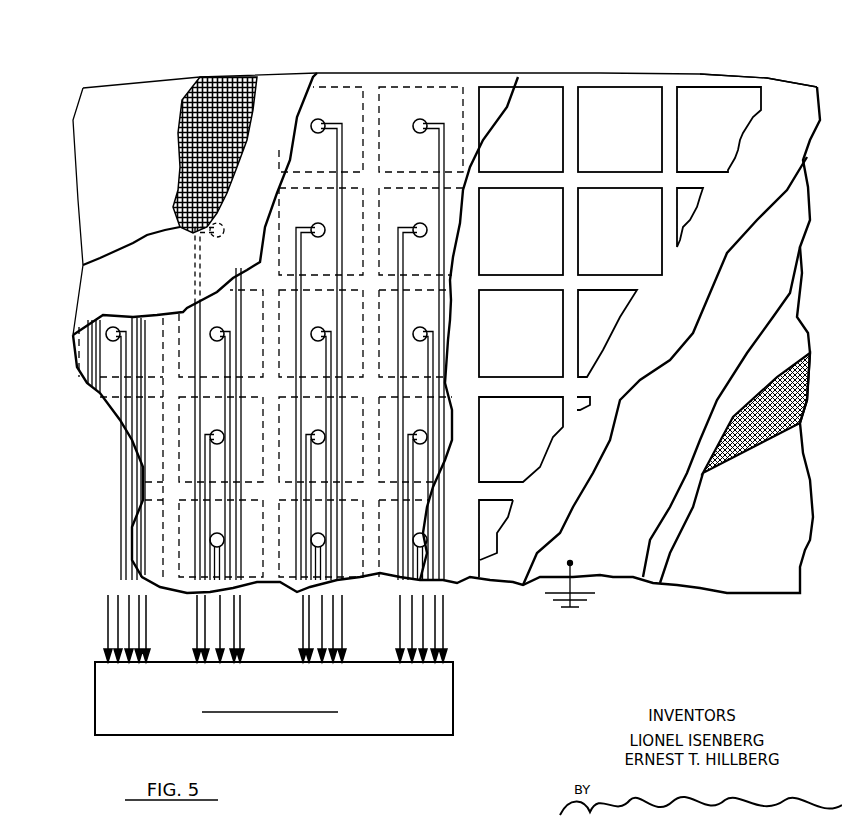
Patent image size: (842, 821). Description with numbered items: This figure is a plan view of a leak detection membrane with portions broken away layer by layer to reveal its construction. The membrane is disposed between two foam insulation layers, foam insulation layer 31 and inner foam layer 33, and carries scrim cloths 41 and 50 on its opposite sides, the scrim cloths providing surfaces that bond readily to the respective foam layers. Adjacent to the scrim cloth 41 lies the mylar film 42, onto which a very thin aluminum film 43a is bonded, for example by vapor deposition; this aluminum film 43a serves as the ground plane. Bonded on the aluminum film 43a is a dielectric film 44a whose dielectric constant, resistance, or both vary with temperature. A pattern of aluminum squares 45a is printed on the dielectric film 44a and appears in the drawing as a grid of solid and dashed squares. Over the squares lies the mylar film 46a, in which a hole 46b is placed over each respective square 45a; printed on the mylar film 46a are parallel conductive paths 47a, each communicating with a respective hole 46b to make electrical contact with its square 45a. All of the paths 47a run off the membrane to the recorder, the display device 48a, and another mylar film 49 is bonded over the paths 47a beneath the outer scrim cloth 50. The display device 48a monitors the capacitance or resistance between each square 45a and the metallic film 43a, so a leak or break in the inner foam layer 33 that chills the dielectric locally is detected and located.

The foam insulation layer 31 is at (125, 110).
The inner foam insulation layer 33 is at (773, 493).
The scrim cloth 41 is at (798, 397).
The mylar film 42 is at (785, 317).
The aluminum film 43a is at (800, 203).
The dielectric film 44a is at (783, 112).
The squares 45a is at (385, 96).
The mylar film 46a is at (112, 326).
The hole 46b is at (423, 121).
The conductive paths 47a is at (399, 280).
The display device 48a is at (115, 707).
The mylar film 49 is at (279, 90).
The scrim cloth 50 is at (227, 74).